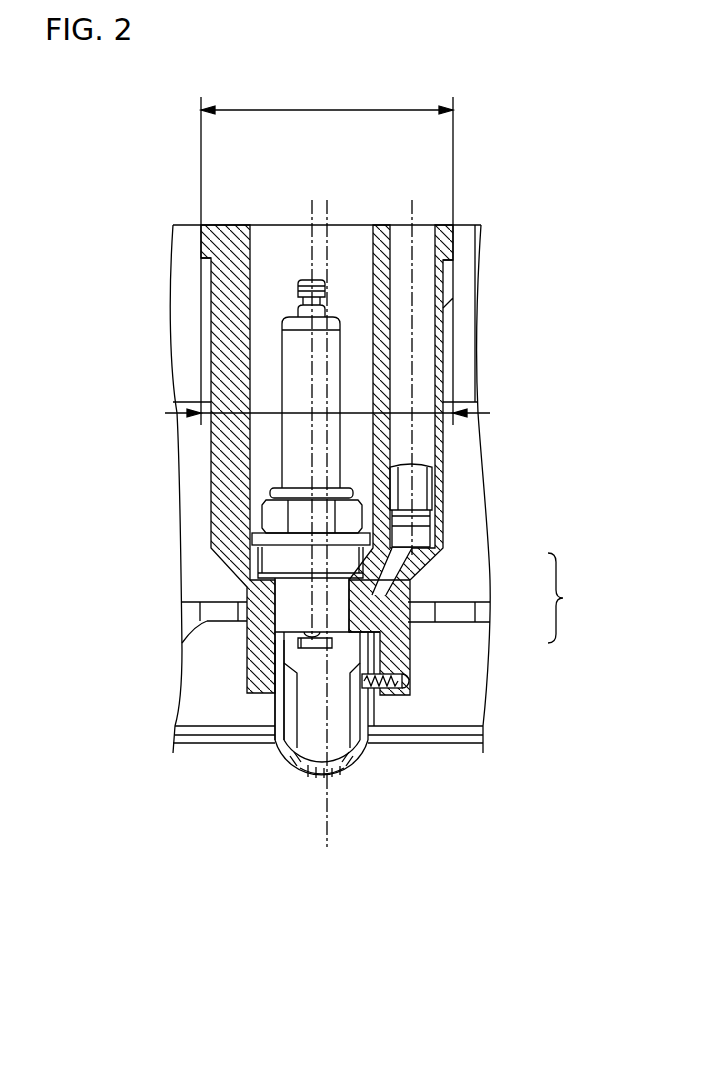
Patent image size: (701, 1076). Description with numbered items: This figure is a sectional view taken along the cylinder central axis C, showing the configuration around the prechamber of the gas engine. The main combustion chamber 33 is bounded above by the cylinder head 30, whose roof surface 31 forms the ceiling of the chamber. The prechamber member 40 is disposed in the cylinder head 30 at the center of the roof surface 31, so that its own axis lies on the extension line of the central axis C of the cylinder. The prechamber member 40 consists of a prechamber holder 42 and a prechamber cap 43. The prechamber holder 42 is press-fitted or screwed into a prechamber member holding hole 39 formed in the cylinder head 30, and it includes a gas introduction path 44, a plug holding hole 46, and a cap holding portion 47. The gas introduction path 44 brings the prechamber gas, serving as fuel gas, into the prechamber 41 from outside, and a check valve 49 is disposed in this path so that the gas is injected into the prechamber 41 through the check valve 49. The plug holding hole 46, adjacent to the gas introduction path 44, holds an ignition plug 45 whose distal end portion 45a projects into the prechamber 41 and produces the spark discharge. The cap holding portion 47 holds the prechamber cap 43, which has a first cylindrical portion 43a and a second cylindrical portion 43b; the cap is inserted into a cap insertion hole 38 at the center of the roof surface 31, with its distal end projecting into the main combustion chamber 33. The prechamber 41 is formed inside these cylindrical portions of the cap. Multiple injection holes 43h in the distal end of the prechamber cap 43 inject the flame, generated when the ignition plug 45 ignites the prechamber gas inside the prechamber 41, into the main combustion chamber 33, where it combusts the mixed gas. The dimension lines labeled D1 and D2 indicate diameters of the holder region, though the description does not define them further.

The cylinder head 30 is at (408, 745).
The roof surface 31 is at (210, 743).
The main combustion chamber 33 is at (402, 925).
The cap insertion hole 38 is at (357, 752).
The prechamber member holding hole 39 is at (208, 253).
The prechamber member 40 is at (572, 598).
The prechamber 41 is at (312, 657).
The prechamber holder 42 is at (442, 530).
The prechamber cap 43 is at (373, 713).
The first cylindrical portion 43a is at (277, 708).
The second cylindrical portion 43b is at (285, 740).
The injection holes 43h is at (295, 763).
The gas introduction path 44 is at (410, 580).
The ignition plug 45 is at (281, 316).
The distal end portion 45a is at (332, 647).
The plug holding hole 46 is at (282, 591).
The cap holding portion 47 is at (247, 658).
The check valve 49 is at (427, 520).
The central axis C is at (311, 546).
The inner diameter D1 is at (312, 397).
The outer diameter D2 is at (327, 150).